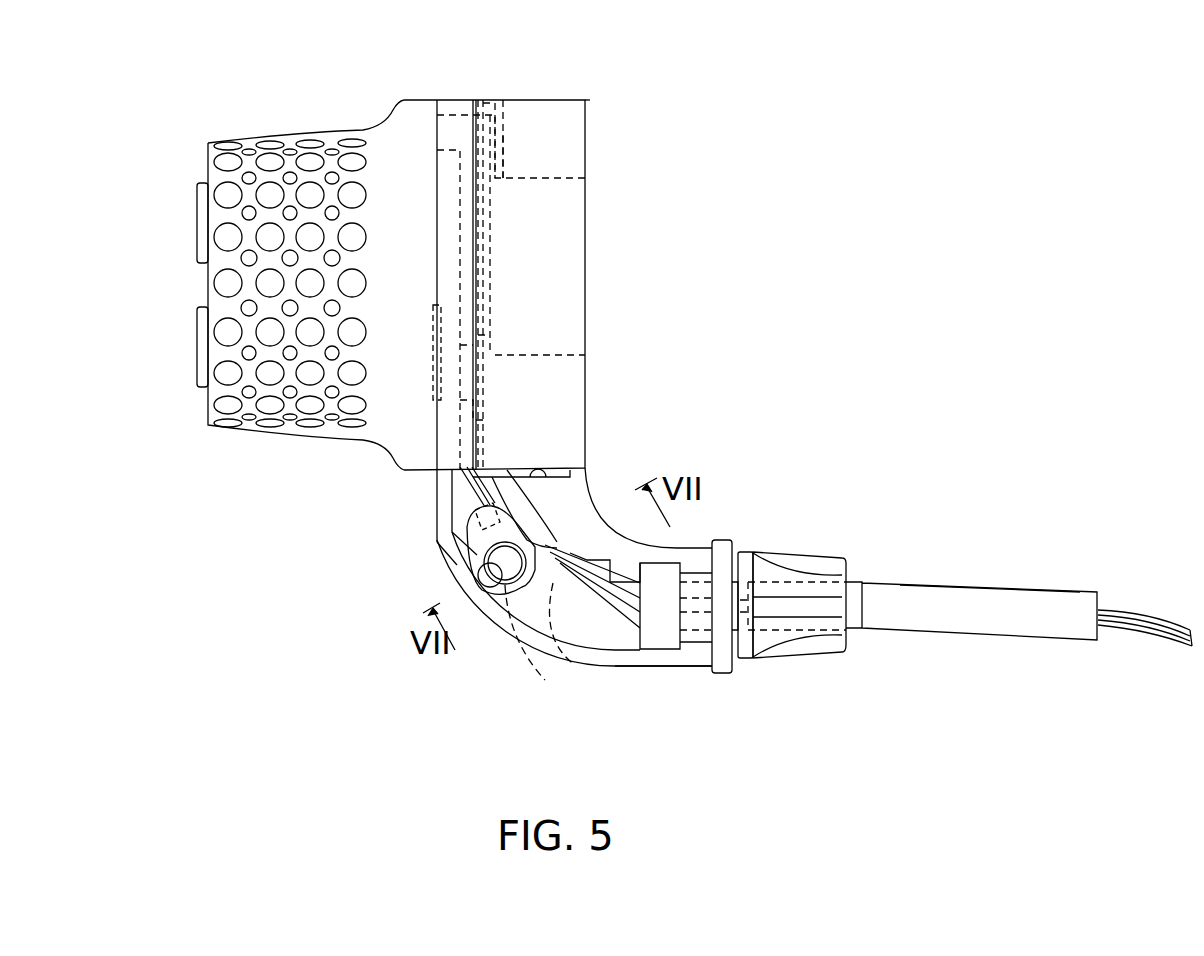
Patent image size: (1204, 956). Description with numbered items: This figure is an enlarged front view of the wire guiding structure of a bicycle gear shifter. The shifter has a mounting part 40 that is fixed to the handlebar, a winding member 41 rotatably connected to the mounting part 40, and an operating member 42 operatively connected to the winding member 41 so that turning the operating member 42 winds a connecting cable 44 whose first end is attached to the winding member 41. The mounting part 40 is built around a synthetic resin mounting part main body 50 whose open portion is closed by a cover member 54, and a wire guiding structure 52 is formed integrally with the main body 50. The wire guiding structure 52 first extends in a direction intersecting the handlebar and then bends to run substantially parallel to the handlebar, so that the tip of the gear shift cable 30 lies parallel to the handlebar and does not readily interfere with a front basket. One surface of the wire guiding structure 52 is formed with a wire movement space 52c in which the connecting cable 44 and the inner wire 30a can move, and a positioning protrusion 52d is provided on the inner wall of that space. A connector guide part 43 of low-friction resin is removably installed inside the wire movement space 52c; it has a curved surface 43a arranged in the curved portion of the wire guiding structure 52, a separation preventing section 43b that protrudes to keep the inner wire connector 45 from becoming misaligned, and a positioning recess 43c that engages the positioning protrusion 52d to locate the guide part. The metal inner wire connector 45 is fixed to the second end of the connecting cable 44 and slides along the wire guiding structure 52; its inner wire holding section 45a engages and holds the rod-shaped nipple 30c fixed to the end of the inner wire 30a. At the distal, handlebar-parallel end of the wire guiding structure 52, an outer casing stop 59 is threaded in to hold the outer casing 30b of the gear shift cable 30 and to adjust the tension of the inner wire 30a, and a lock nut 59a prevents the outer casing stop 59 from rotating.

The gear shift cable 30 is at (970, 572).
The inner wire 30a is at (1140, 618).
The outer casing 30b is at (1018, 630).
The nipple 30c is at (575, 546).
The mounting part 40 is at (602, 150).
The winding member 41 is at (505, 135).
The operating member 42 is at (333, 120).
The connector guide part 43 is at (546, 510).
The curved surface 43a is at (533, 663).
The separation preventing section 43b is at (612, 600).
The positioning recess 43c is at (523, 640).
The connecting cable 44 is at (467, 498).
The inner wire connector 45 is at (465, 545).
The inner wire holding section 45a is at (483, 568).
The mounting part main body 50 is at (487, 105).
The wire guiding structure 52 is at (560, 672).
The wire movement space 52c is at (655, 648).
The positioning protrusion 52d is at (690, 547).
The cover member 54 is at (590, 100).
The outer casing stop 59 is at (805, 550).
The lock nut 59a is at (725, 672).